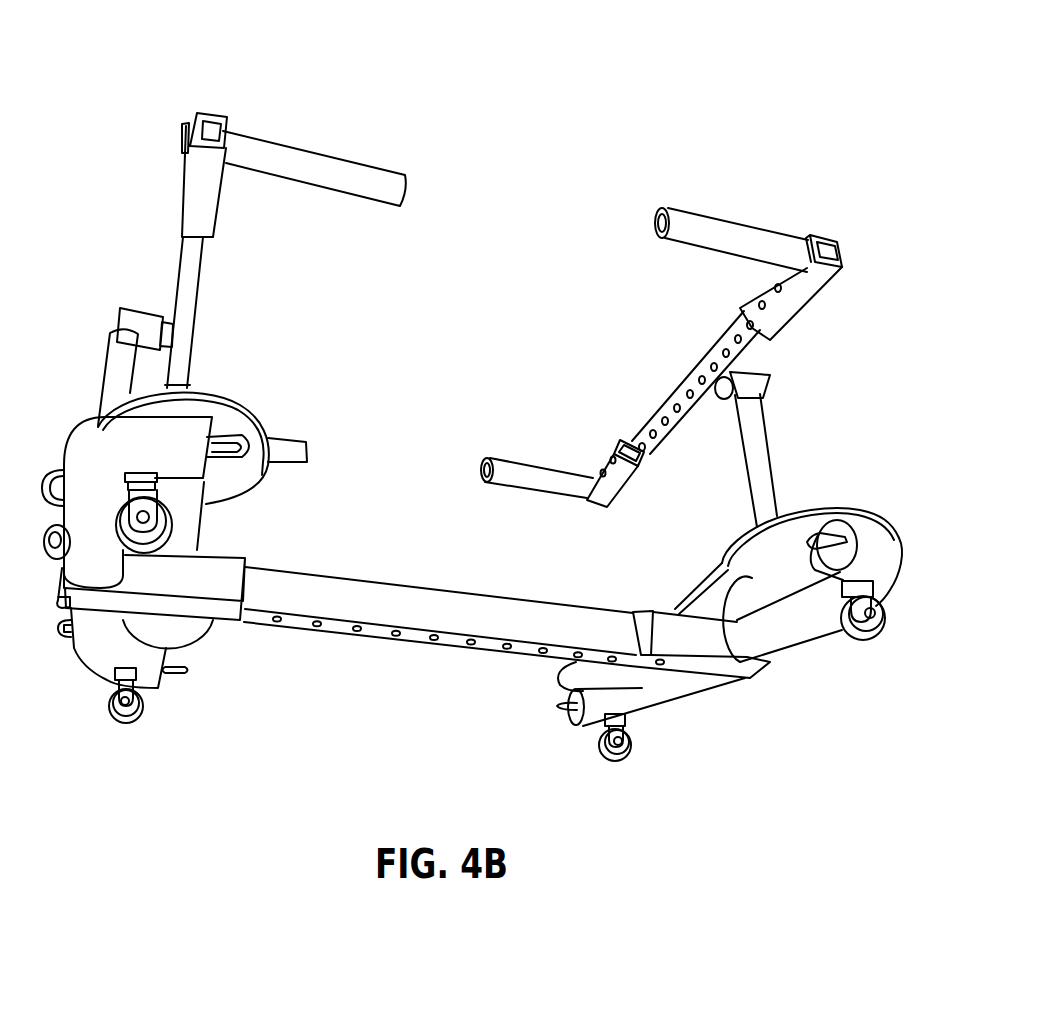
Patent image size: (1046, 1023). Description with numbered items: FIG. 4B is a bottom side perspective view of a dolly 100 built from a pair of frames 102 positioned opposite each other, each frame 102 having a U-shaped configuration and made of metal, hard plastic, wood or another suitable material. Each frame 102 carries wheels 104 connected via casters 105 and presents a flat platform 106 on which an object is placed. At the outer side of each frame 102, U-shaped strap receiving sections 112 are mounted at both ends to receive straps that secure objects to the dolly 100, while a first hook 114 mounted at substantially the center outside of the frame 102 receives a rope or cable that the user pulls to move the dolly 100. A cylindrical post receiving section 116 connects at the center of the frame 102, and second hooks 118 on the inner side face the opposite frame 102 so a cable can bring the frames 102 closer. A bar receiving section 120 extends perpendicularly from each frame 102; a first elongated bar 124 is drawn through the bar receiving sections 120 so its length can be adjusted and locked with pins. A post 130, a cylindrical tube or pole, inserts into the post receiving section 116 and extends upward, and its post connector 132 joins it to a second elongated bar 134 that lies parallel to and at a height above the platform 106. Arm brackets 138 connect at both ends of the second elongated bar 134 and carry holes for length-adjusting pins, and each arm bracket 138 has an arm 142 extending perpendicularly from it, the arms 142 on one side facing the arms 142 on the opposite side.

The dolly 100 is at (117, 60).
The frame 102 is at (85, 447).
The wheel 104 is at (140, 553).
The caster 105 is at (150, 503).
The platform 106 is at (217, 398).
The strap receiving section 112 is at (58, 473).
The first hook 114 is at (47, 530).
The post receiving section 116 is at (58, 608).
The second hook 118 is at (247, 425).
The bar receiving section 120 is at (222, 607).
The first elongated bar 124 is at (508, 606).
The post 130 is at (120, 357).
The post connector 132 is at (150, 322).
The second elongated bar 134 is at (707, 357).
The arm bracket 138 is at (208, 180).
The arm 142 is at (354, 183).